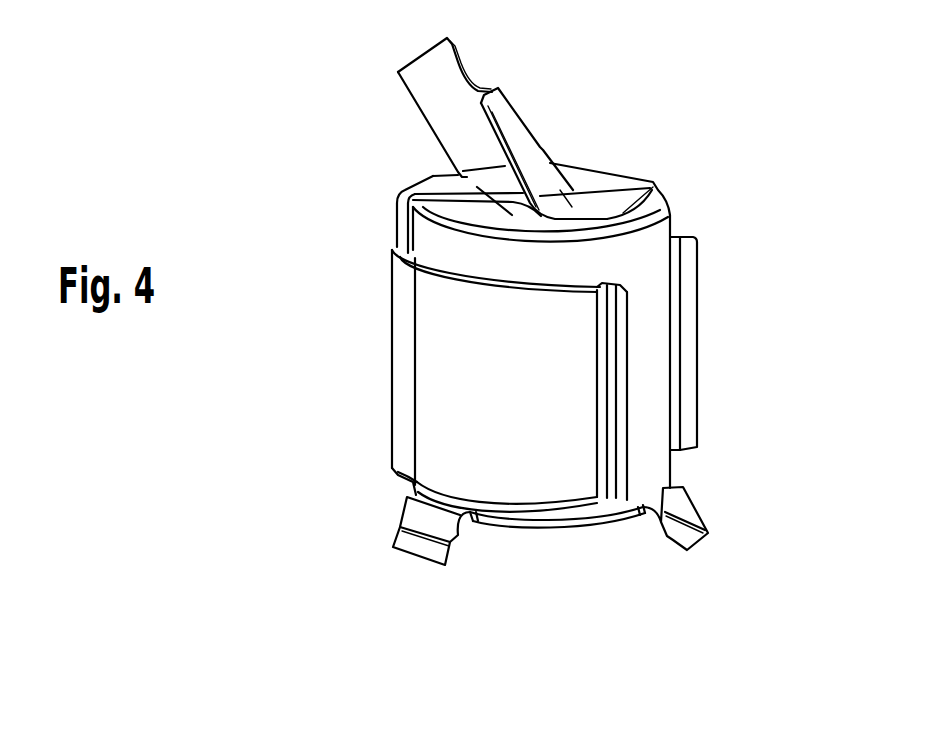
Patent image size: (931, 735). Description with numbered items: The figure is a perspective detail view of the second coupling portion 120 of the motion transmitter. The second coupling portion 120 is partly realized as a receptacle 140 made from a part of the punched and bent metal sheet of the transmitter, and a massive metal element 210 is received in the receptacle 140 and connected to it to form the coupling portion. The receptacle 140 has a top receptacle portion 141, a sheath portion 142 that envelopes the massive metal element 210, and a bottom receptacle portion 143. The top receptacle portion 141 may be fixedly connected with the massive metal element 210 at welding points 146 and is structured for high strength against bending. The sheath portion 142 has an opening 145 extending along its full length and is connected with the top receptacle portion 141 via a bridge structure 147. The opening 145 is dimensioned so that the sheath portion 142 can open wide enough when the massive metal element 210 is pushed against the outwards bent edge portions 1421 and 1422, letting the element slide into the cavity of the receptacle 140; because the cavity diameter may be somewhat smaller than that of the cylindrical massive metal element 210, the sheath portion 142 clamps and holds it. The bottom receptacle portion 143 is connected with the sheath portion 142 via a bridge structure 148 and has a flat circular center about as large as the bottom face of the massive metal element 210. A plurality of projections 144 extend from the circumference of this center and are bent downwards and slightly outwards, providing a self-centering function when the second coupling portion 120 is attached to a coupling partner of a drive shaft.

The second coupling portion 120 is at (683, 127).
The receptacle 140 is at (372, 307).
The top receptacle portion 141 is at (520, 137).
The sheath portion 142 is at (403, 378).
The bottom receptacle portion 143 is at (547, 530).
The projections 144 is at (692, 532).
The opening 145 is at (657, 323).
The welding points 146 is at (620, 173).
The bridge structure 147 is at (397, 222).
The bridge structure 148 is at (407, 482).
The massive metal element 210 is at (647, 410).
The outwards bent edge portion 1421 is at (687, 345).
The outwards bent edge portion 1422 is at (622, 462).